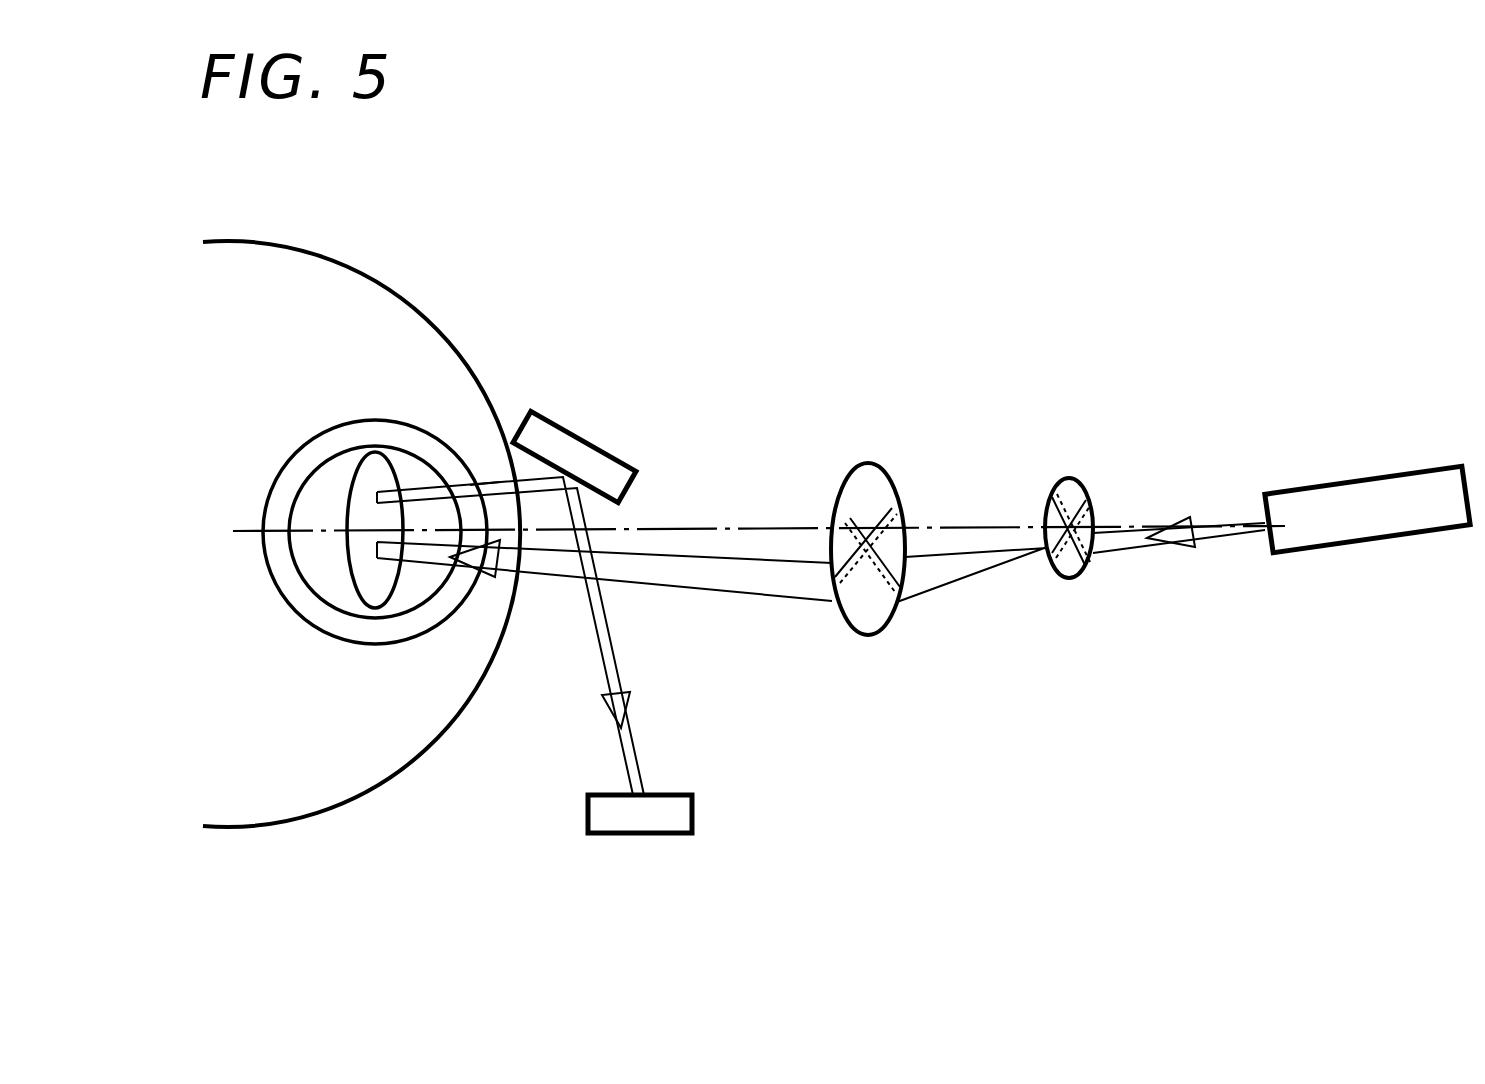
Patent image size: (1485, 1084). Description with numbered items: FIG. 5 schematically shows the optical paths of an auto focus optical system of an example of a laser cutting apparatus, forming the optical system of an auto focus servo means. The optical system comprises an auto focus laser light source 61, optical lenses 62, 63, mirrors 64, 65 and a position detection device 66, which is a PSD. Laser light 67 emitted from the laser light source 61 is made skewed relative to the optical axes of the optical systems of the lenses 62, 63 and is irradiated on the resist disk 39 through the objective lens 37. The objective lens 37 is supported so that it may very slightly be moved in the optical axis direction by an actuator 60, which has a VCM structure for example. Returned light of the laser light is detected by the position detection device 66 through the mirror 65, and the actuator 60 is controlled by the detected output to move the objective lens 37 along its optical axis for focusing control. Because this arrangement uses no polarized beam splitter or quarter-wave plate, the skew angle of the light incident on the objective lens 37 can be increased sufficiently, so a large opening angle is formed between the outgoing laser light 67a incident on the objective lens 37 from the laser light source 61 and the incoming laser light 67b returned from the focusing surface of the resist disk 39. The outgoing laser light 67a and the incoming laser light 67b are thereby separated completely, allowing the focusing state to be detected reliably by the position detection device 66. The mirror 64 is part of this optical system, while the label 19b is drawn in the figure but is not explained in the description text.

The resist disk 39 is at (417, 313).
The actuator 60 is at (292, 453).
The objective lens 37 is at (325, 603).
The mirror 64 is at (377, 607).
The reflected light path 19b is at (493, 477).
The mirror 65 is at (596, 447).
The incoming laser light 67b is at (580, 514).
The outgoing laser light 67a is at (552, 577).
The optical lens 63 is at (868, 462).
The optical lens 62 is at (1068, 478).
The laser light 67 is at (1120, 543).
The auto focus laser light source 61 is at (1395, 472).
The position detection device 66 is at (655, 835).